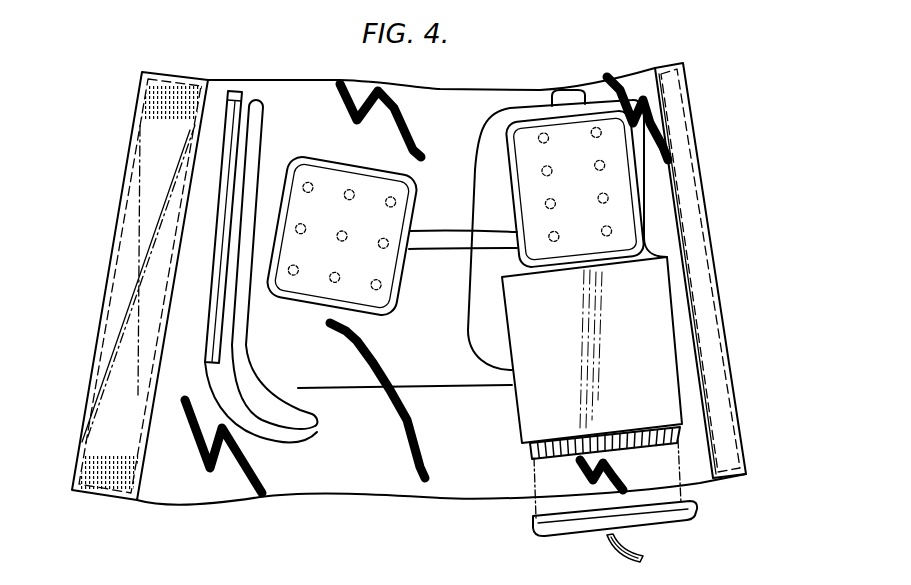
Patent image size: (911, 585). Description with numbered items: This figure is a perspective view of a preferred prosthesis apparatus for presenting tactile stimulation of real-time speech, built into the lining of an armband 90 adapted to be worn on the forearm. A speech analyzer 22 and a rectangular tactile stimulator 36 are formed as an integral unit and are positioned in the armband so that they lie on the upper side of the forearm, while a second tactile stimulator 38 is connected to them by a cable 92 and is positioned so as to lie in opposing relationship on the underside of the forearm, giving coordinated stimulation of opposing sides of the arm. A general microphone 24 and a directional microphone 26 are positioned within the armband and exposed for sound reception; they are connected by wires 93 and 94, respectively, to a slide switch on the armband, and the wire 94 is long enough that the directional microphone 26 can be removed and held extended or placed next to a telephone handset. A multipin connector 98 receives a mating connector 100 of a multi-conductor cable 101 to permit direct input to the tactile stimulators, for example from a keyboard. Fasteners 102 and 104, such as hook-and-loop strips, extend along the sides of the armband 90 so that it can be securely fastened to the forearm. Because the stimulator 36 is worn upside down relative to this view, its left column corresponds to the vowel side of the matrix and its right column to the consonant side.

The speech analyzer 22 is at (662, 390).
The general microphone 24 is at (549, 102).
The directional microphone 26 is at (227, 115).
The tactile stimulator 36 is at (597, 124).
The tactile stimulator 38 is at (333, 173).
The armband 90 is at (316, 85).
The cable 92 is at (447, 246).
The wire 93 is at (477, 150).
The wire 94 is at (333, 389).
The multipin connector 98 is at (560, 457).
The mating connector 100 is at (697, 510).
The multi-conductor cable 101 is at (638, 553).
The fastener 102 is at (148, 137).
The fastener 104 is at (708, 331).